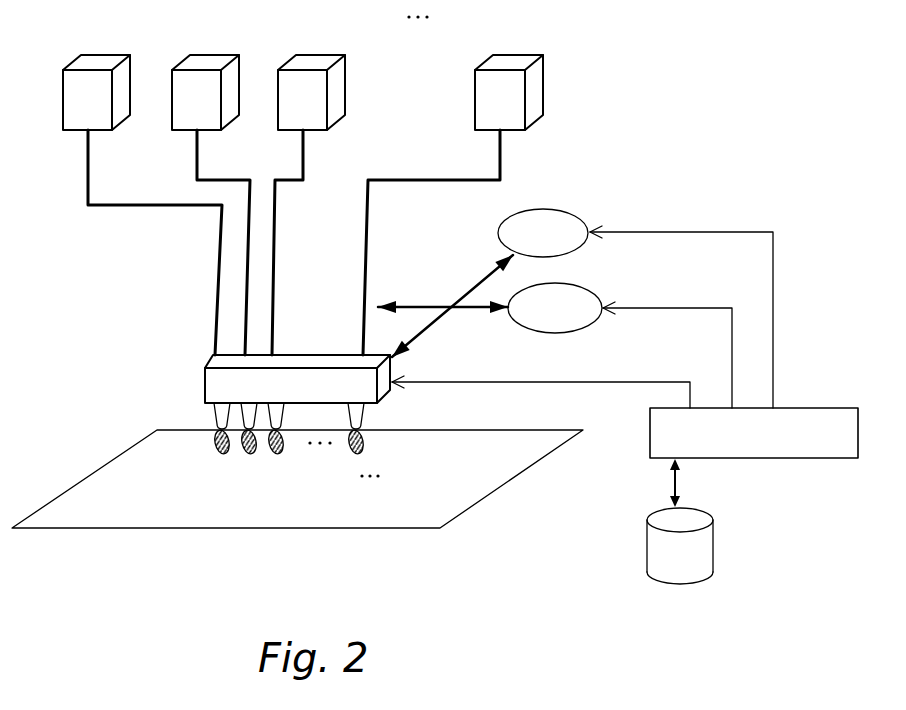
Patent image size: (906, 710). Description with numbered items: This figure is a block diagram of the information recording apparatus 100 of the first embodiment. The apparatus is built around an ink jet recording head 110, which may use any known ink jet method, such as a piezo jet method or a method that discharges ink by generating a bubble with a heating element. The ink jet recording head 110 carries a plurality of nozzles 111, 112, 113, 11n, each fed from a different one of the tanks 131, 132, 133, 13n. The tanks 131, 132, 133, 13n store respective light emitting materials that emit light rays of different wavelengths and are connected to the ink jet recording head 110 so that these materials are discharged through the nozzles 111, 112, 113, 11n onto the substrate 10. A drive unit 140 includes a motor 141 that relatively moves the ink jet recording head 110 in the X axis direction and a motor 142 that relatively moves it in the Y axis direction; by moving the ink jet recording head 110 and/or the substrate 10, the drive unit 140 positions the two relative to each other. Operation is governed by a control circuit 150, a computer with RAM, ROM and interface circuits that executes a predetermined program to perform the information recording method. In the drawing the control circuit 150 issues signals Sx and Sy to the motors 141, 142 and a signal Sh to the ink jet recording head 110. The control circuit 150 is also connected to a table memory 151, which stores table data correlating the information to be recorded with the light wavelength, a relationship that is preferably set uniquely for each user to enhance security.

The information recording apparatus 100 is at (556, 565).
The substrate 10 is at (584, 431).
The ink jet recording head 110 is at (295, 355).
The nozzle 111 is at (213, 445).
The nozzle 112 is at (244, 453).
The nozzle 113 is at (281, 452).
The nozzle 11n is at (360, 452).
The tank 131 is at (110, 55).
The tank 132 is at (208, 55).
The tank 133 is at (305, 55).
The tank 13n is at (488, 56).
The drive unit 140 is at (595, 197).
The motor 141 is at (599, 299).
The motor 142 is at (586, 221).
The control circuit 150 is at (727, 458).
The table memory 151 is at (713, 545).
The X drive signal Sx is at (701, 307).
The Y drive signal Sy is at (706, 231).
The head drive signal Sh is at (600, 382).